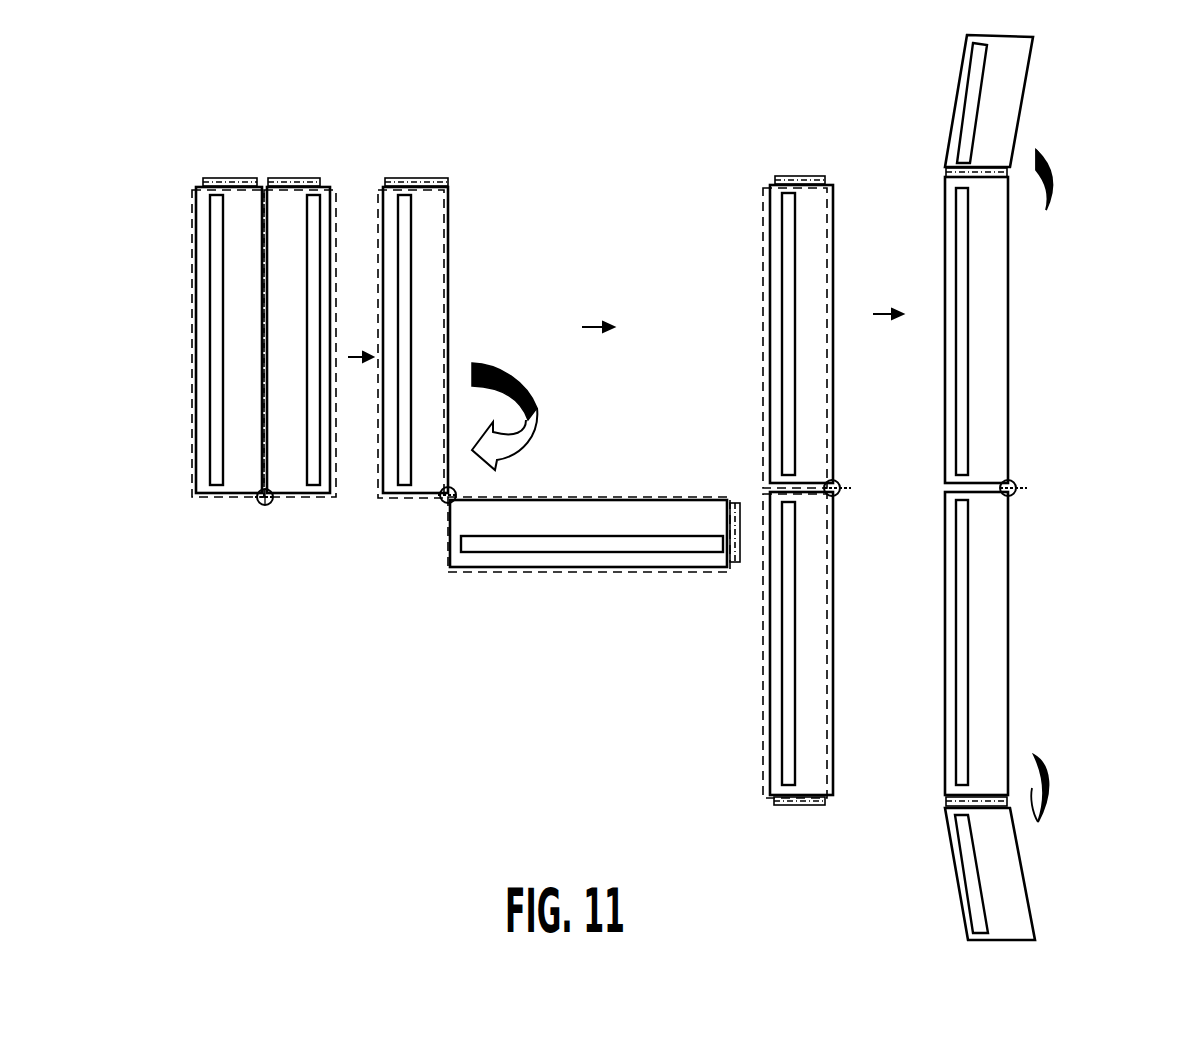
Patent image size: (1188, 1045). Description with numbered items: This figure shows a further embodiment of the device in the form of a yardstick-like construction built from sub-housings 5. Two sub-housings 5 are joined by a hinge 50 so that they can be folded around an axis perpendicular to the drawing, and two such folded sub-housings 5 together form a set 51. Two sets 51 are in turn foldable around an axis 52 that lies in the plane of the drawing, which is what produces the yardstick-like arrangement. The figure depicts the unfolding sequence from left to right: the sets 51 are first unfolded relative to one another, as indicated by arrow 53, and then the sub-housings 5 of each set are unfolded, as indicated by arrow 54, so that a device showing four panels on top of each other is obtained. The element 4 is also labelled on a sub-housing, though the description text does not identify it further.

The solar cell 4 is at (308, 207).
The sub-housing 5 is at (300, 309).
The hinge 50 is at (264, 506).
The set 51 is at (613, 487).
The axis 52 is at (737, 557).
The arrow 53 is at (535, 406).
The arrow 54 is at (1047, 783).